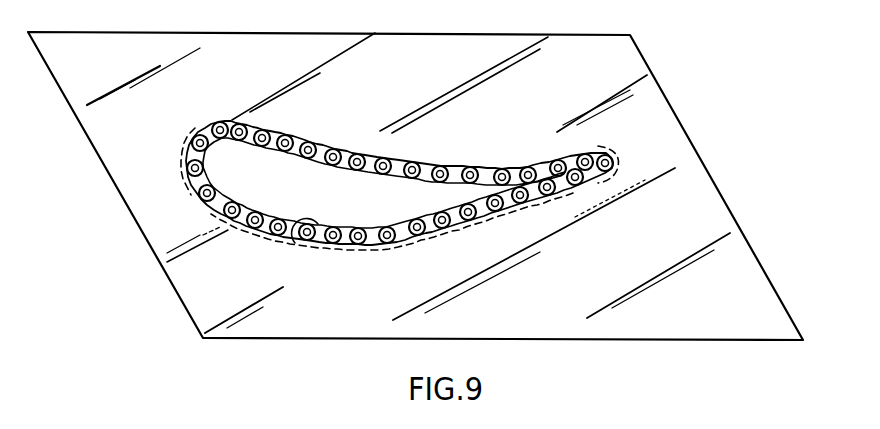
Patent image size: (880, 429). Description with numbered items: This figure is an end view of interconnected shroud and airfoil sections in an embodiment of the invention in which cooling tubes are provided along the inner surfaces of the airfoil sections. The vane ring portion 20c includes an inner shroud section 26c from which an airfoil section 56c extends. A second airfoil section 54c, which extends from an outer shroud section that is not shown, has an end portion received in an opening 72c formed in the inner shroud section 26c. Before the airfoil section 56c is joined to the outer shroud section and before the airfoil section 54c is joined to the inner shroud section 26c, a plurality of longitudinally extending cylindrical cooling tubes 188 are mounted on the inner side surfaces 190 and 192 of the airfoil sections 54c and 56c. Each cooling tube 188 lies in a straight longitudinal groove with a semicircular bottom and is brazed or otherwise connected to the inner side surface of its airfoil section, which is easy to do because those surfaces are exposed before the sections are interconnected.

The vane ring portion 20c is at (762, 86).
The inner shroud section 26c is at (766, 270).
The opening 72c is at (317, 112).
The second airfoil section 54c is at (357, 172).
The airfoil section 56c is at (428, 242).
The cooling tubes 188 is at (204, 170).
The inner side surface 190 is at (414, 162).
The inner side surface 192 is at (300, 244).